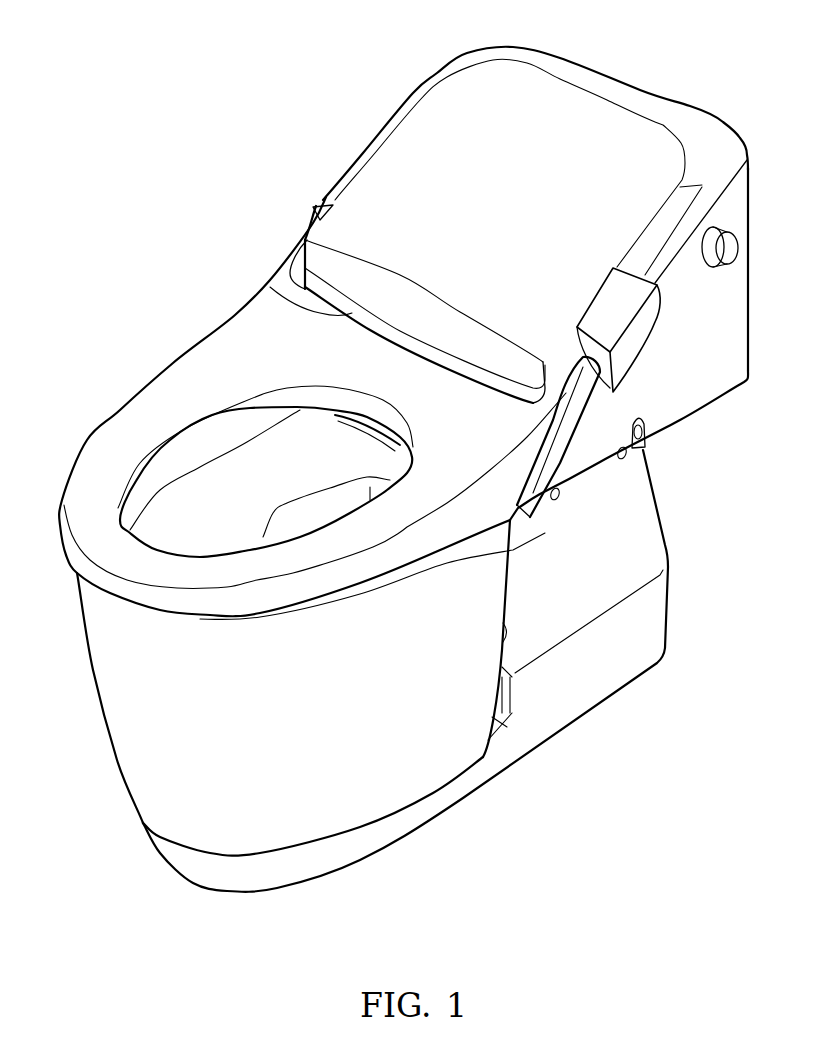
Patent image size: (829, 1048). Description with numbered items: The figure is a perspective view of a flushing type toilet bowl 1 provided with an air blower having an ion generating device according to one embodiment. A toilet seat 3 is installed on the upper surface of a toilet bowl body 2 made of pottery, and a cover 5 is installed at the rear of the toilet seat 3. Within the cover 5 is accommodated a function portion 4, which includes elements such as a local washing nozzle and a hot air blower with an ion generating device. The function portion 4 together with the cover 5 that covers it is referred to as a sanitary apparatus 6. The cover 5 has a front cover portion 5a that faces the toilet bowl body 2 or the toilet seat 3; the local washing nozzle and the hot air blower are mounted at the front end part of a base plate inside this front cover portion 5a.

The flushing type toilet bowl 1 is at (250, 196).
The toilet bowl body 2 is at (103, 667).
The toilet seat 3 is at (173, 373).
The function portion 4 is at (448, 113).
The cover 5 is at (568, 97).
The front cover portion 5a is at (301, 307).
The sanitary apparatus 6 is at (300, 193).